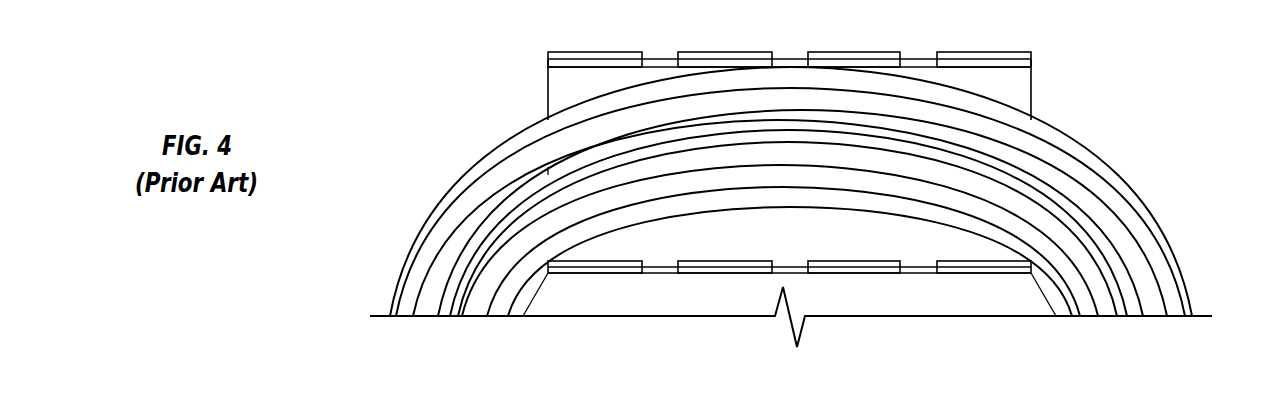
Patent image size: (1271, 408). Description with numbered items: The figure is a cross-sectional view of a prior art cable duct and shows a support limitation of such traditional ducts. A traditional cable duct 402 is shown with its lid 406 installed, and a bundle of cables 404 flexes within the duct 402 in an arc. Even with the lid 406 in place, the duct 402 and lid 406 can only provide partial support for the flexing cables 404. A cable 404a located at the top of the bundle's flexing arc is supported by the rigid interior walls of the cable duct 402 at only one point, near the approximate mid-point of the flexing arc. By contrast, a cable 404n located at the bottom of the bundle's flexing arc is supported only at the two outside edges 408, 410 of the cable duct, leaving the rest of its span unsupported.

The cable duct 402 is at (1033, 82).
The cables 404 is at (1098, 250).
The cable 404a is at (1042, 140).
The cable 404n is at (1078, 310).
The lid 406 is at (571, 57).
The outside edge 408 is at (523, 317).
The outside edge 410 is at (1056, 316).